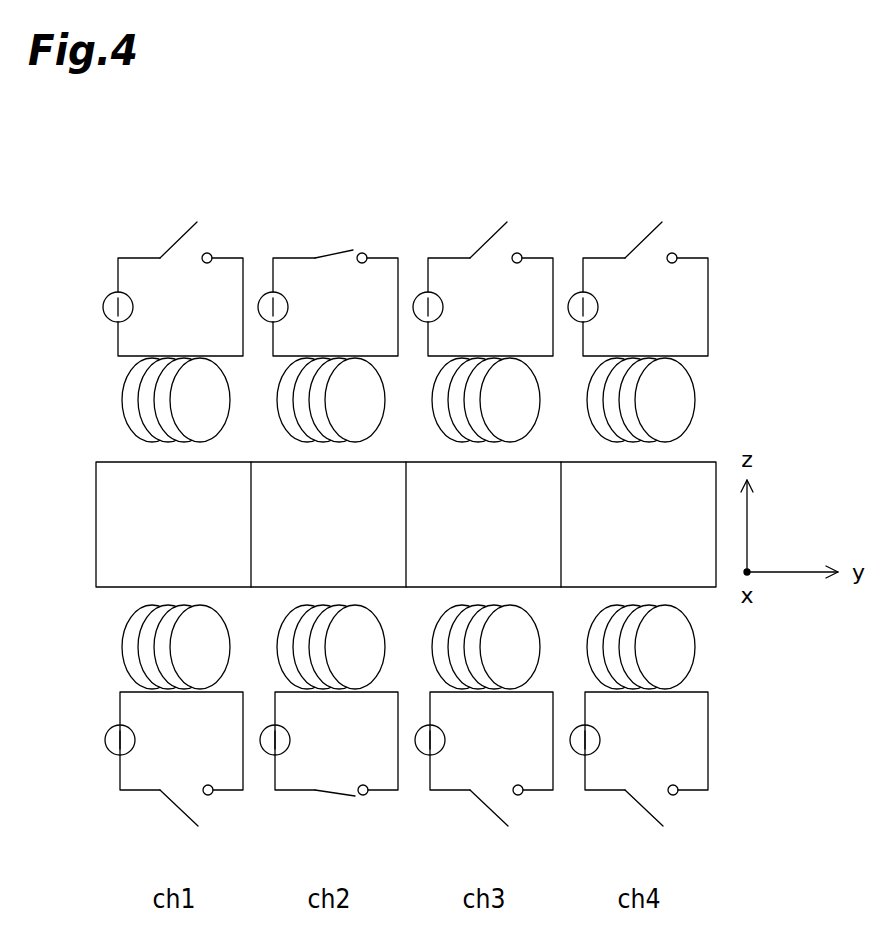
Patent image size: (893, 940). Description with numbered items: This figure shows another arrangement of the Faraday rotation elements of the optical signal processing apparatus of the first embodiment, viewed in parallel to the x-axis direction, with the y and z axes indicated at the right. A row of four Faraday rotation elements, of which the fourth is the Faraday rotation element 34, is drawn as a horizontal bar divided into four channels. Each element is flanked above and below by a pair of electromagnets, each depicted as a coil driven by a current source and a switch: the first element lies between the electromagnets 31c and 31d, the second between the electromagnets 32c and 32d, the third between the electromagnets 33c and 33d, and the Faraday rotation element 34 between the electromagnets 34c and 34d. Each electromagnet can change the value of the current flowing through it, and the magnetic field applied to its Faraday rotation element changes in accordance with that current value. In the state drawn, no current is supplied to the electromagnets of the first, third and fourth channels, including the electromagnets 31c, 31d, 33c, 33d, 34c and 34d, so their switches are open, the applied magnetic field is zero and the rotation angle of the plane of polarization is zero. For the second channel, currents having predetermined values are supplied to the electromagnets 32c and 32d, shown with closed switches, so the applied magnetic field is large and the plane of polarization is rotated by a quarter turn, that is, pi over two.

The electromagnet 31c is at (142, 440).
The electromagnet 32c is at (297, 440).
The electromagnet 33c is at (452, 440).
The electromagnet 34c is at (607, 440).
The electromagnet 31d is at (128, 682).
The electromagnet 32d is at (283, 682).
The electromagnet 33d is at (438, 682).
The electromagnet 34d is at (593, 682).
The Faraday rotation element 34 is at (109, 573).